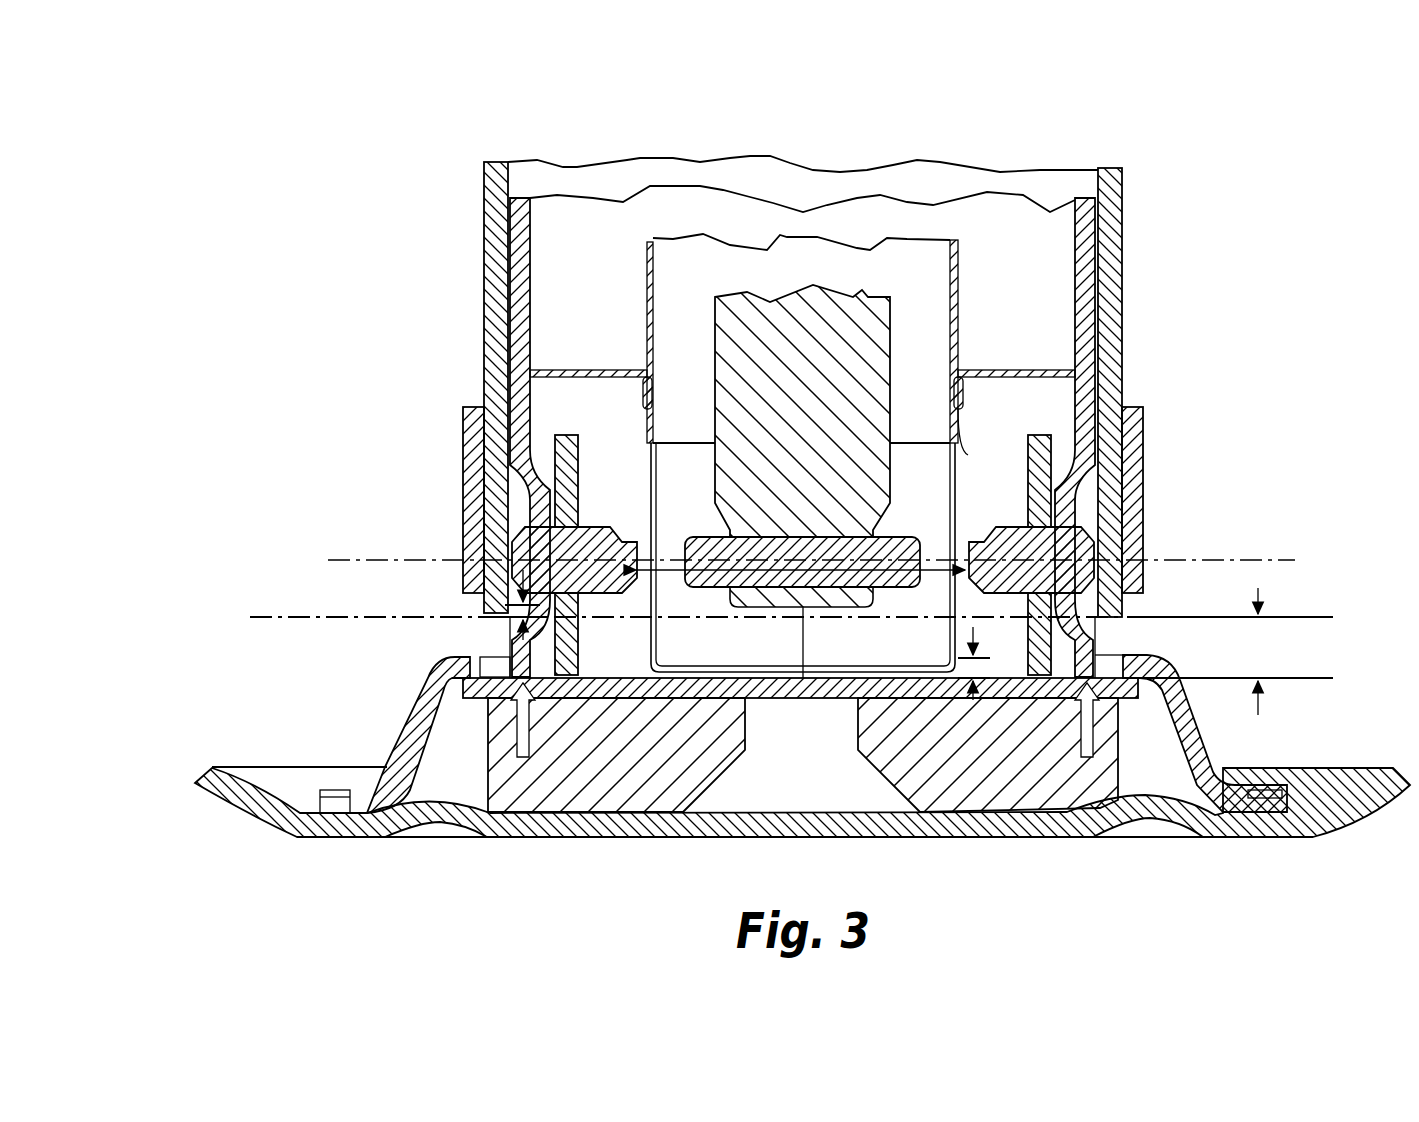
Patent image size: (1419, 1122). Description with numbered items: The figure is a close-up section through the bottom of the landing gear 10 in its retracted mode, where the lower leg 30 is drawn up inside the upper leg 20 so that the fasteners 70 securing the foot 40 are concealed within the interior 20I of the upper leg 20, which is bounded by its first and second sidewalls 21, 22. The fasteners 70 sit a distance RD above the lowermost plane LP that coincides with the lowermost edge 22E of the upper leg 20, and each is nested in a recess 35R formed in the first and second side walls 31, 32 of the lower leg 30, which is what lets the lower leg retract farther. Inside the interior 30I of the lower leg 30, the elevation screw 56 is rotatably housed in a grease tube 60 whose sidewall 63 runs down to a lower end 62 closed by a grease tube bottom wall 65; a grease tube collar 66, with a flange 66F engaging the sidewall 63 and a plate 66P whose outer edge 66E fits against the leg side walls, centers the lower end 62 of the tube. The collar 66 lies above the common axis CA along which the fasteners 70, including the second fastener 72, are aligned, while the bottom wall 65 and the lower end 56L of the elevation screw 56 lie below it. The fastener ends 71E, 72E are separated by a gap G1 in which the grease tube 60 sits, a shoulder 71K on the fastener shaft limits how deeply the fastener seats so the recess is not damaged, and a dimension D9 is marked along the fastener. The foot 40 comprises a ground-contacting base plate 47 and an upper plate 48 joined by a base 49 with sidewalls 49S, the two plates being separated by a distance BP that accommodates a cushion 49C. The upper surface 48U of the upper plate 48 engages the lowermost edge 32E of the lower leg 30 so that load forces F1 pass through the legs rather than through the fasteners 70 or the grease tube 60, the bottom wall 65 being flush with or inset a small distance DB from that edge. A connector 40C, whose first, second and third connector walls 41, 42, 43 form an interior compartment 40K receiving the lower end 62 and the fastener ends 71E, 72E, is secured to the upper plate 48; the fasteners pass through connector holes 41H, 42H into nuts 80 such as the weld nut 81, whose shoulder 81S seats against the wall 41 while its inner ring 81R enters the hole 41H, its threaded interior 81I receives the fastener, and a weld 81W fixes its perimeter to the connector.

The landing gear 10 is at (426, 164).
The upper leg 20 is at (489, 153).
The interior of the upper leg 20I is at (522, 182).
The first sidewall of the upper leg 21 is at (500, 315).
The second sidewall of the upper leg 22 is at (1112, 315).
The lowermost edge of the upper leg 22E is at (468, 615).
The lower leg 30 is at (524, 180).
The interior of the lower leg 30I is at (532, 250).
The first side wall of the lower leg 31 is at (515, 258).
The second side wall of the lower leg 32 is at (1112, 265).
The lowermost edge of the lower leg 32E is at (488, 690).
The recess 35R is at (518, 690).
The foot 40 is at (247, 713).
The connector 40C is at (632, 455).
The interior compartment 40K is at (642, 671).
The first connector wall 41 is at (566, 440).
The first connector hole 41H is at (575, 608).
The second connector wall 42 is at (1033, 460).
The second connector hole 42H is at (1040, 600).
The third connector wall 43 is at (975, 455).
The base plate 47 is at (240, 831).
The upper plate 48 is at (601, 706).
The upper surface of the upper plate 48U is at (596, 690).
The base 49 is at (400, 762).
The sidewalls of the base 49S is at (413, 725).
The cushion 49C is at (890, 765).
The elevation screw 56 is at (868, 318).
The lower end of the elevation screw 56L is at (820, 596).
The grease tube 60 is at (853, 402).
The lower end of the grease tube 62 is at (972, 504).
The grease tube sidewall 63 is at (958, 302).
The grease tube bottom wall 65 is at (895, 676).
The grease tube collar 66 is at (565, 365).
The plate of the grease tube collar 66P is at (607, 370).
The outer edge of the collar plate 66E is at (540, 372).
The flange of the grease tube collar 66F is at (641, 410).
The fasteners 70 is at (638, 590).
The fastener end 71E is at (625, 538).
The first shoulder 71K is at (626, 548).
The second fastener 72 is at (997, 600).
The second fastener end 72E is at (948, 535).
The nuts 80 is at (983, 535).
The weld nut 81 is at (574, 560).
The shoulder of the weld nut 81S is at (545, 450).
The weld 81W is at (578, 530).
The bolt inner end 81I is at (605, 527).
The inner ring 81R is at (560, 527).
The common axis CA is at (352, 558).
The lowermost plane of the upper leg LP is at (330, 617).
The distance RD is at (472, 642).
The gap G1 is at (935, 572).
The load forces F1 is at (516, 752).
The direction D9 is at (692, 548).
The distance between upper plate and base plate BP is at (765, 702).
The small distance DB is at (975, 650).